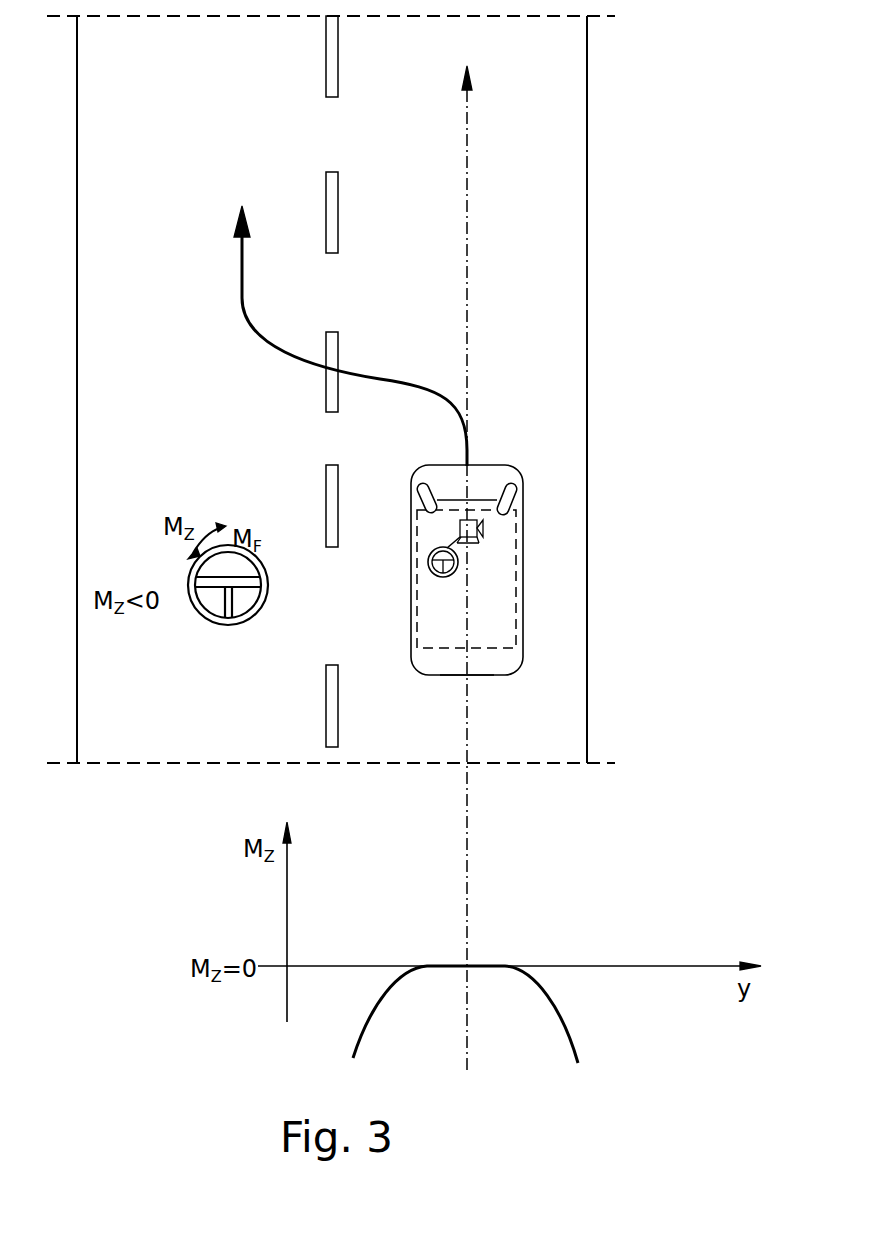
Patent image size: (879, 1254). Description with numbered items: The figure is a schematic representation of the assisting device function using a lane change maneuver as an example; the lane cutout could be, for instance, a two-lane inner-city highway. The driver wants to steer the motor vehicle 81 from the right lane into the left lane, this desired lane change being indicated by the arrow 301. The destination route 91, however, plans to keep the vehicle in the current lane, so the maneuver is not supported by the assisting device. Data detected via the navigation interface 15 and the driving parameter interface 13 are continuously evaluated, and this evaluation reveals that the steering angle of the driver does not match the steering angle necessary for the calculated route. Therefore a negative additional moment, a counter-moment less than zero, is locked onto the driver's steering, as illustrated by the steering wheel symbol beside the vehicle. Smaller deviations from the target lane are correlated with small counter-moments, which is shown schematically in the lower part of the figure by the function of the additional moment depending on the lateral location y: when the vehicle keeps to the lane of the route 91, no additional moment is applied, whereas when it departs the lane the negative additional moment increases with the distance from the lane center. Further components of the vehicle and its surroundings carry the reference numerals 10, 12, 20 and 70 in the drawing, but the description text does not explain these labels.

The vehicle 10 is at (467, 547).
The camera sensor 12 is at (460, 525).
The driving parameter interface 13 is at (483, 528).
The navigation interface 15 is at (467, 543).
The steering wheel 20 is at (428, 582).
The front wheels with axle 70 is at (477, 497).
The motor vehicle 81 is at (505, 677).
The destination route 91 is at (468, 154).
The arrow indicating the lane change desired by the driver 301 is at (240, 303).